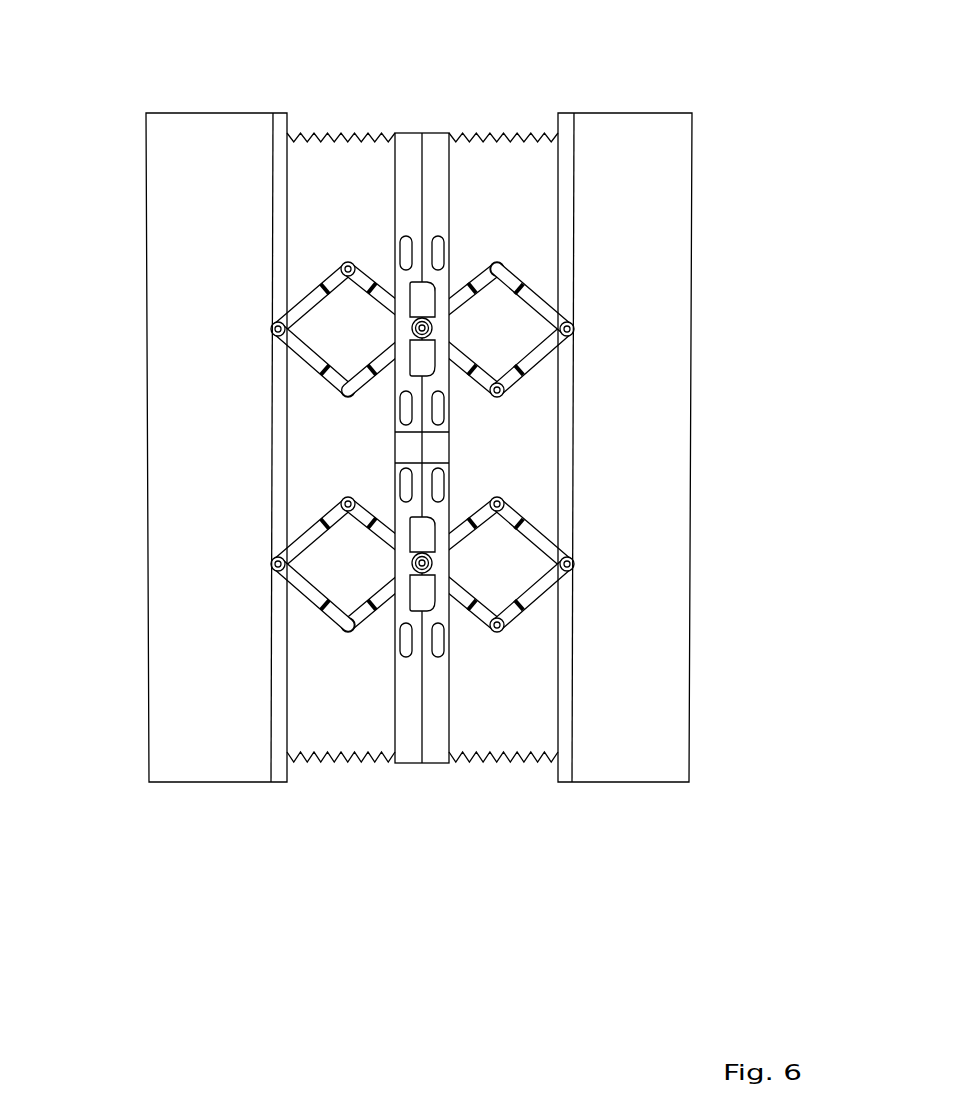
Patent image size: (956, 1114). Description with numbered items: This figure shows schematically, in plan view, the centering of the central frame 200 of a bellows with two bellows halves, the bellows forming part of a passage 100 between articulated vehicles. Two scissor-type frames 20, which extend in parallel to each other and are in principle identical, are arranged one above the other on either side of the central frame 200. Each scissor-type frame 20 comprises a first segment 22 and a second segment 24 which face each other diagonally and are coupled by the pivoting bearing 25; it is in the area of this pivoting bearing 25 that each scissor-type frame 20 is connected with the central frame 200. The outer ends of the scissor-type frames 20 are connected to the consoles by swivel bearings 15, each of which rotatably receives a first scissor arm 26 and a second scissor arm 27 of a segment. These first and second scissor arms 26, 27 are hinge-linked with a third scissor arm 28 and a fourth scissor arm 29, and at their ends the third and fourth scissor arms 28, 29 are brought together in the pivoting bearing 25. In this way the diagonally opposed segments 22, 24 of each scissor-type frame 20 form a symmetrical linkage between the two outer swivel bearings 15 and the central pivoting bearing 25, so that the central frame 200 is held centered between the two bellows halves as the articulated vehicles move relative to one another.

The fastening arrangement 100 is at (503, 126).
The central frame 200 is at (459, 444).
The scissor-type frame 20 is at (377, 275).
The pivoting bearing 25 is at (421, 315).
The swivel bearing 15 is at (278, 329).
The first segment 22 is at (365, 277).
The second segment 24 is at (508, 255).
The first scissor arm 26 is at (335, 379).
The second scissor arm 27 is at (336, 286).
The third scissor arm 28 is at (385, 367).
The fourth scissor arm 29 is at (343, 257).